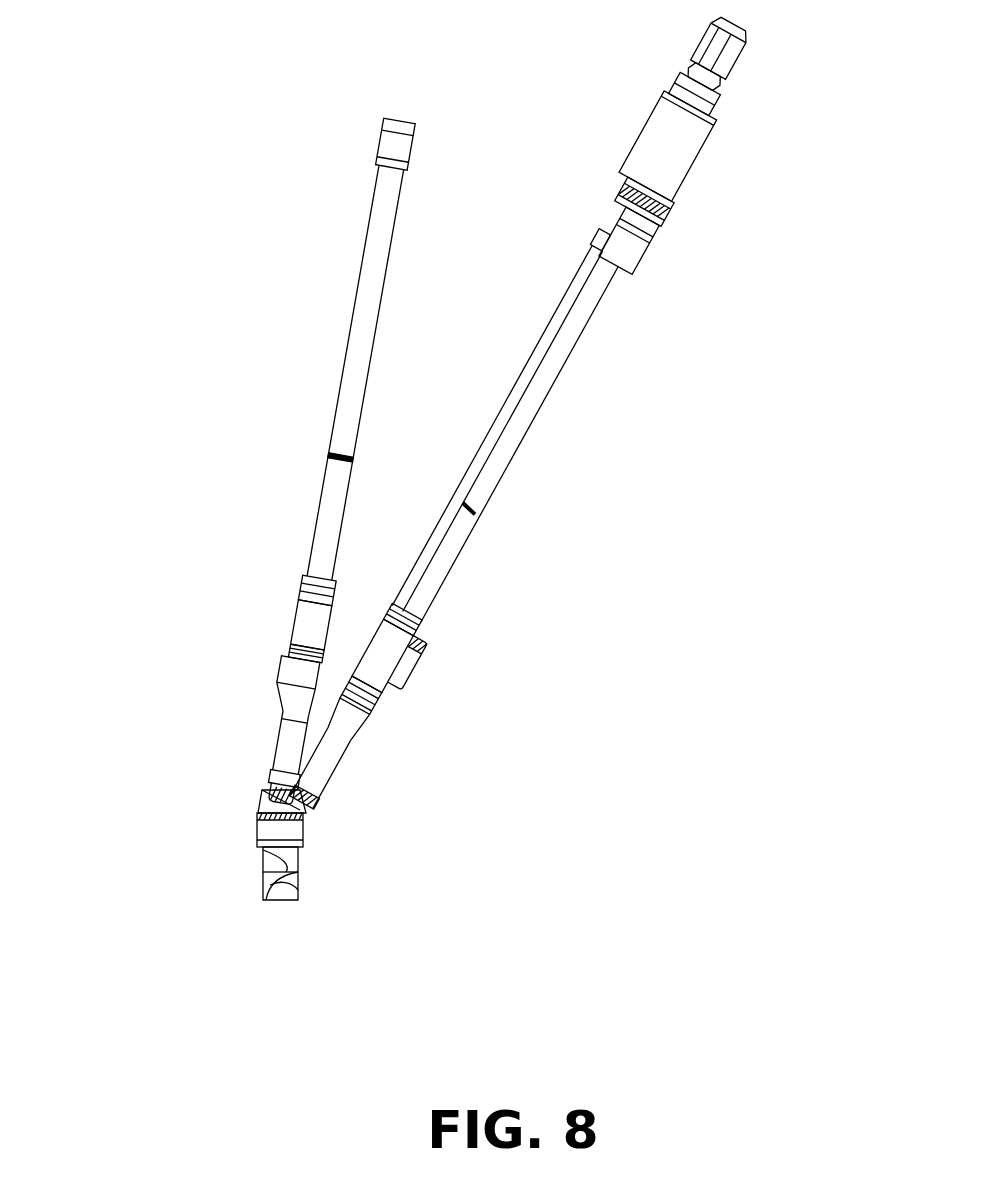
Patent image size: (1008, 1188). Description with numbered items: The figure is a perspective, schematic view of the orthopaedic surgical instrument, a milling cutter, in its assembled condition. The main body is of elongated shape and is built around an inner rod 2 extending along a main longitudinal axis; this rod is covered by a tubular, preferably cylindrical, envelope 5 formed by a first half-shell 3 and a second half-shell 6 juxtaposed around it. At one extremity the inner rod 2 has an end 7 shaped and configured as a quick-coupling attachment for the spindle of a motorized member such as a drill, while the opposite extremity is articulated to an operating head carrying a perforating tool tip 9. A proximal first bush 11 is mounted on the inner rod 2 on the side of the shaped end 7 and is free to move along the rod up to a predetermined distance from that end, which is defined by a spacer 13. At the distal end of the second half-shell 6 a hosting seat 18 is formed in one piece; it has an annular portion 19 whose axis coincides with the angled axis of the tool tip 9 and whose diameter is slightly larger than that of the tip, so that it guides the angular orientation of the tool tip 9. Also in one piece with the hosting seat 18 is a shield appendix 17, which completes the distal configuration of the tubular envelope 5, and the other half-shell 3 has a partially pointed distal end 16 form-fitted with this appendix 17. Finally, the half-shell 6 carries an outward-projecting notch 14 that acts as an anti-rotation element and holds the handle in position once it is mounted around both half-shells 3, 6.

The inner rod 2 is at (523, 353).
The first half-shell 3 is at (310, 627).
The tubular envelope 5 is at (548, 393).
The second half-shell 6 is at (388, 670).
The end 7 is at (705, 80).
The perforating tool tip 9 is at (300, 889).
The first bush 11 is at (612, 238).
The spacer 13 is at (655, 140).
The notch 14 is at (413, 655).
The distal end 16 is at (283, 780).
The shield appendix 17 is at (260, 807).
The hosting seat 18 is at (305, 832).
The annular portion 19 is at (260, 847).